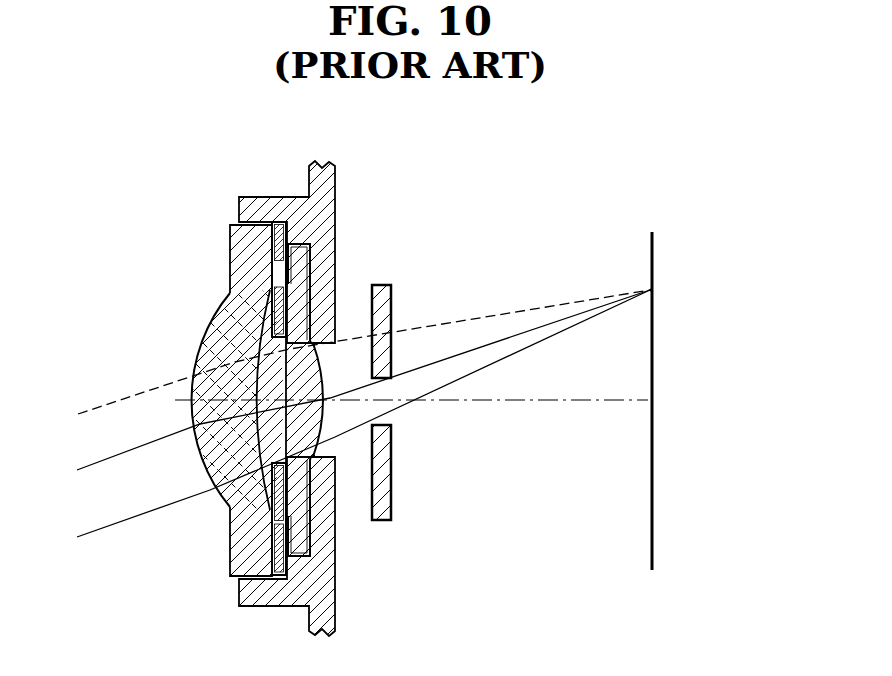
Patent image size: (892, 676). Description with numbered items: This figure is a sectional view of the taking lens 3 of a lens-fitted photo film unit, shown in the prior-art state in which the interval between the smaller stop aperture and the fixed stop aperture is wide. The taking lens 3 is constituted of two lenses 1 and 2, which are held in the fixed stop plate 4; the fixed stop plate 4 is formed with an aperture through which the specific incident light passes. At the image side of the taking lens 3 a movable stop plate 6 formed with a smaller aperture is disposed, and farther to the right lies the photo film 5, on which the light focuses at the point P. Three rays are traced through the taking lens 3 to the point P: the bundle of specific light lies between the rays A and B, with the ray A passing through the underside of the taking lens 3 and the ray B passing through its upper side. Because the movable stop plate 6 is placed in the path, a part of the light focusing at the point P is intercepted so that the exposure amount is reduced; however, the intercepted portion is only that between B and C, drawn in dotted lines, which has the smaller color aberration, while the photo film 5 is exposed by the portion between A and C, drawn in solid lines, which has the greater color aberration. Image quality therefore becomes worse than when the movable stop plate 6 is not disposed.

The lens 1 is at (292, 239).
The lens 2 is at (333, 400).
The taking lens 3 is at (346, 390).
The fixed stop plate 4 is at (322, 553).
The photo film 5 is at (655, 365).
The movable stop plate 6 is at (391, 472).
The point P is at (663, 288).
The point A is at (350, 425).
The point B is at (349, 363).
The point C is at (350, 390).